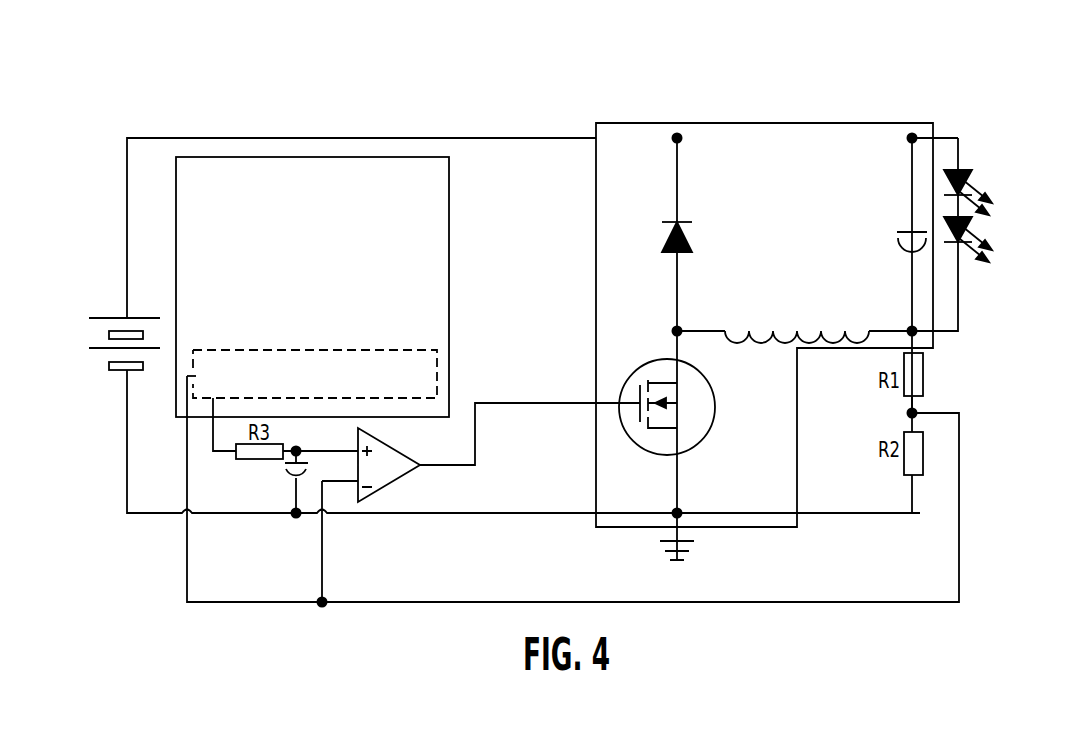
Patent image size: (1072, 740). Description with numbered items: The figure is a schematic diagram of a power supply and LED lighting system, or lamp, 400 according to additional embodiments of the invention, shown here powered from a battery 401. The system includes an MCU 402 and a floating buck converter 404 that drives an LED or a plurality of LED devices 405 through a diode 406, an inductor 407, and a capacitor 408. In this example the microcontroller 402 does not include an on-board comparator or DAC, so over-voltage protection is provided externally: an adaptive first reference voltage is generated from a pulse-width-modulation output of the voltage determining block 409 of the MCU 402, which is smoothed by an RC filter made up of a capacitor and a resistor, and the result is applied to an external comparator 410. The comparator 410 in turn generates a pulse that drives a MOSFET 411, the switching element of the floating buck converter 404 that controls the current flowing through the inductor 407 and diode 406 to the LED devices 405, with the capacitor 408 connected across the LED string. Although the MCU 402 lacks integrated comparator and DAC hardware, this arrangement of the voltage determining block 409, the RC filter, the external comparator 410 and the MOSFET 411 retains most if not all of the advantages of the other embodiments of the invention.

The LED driving circuit 400 is at (748, 84).
The battery 401 is at (110, 316).
The MCU 402 is at (449, 268).
The floating buck converter 404 is at (823, 123).
The LED devices 405 is at (962, 170).
The diode 406 is at (692, 240).
The inductor 407 is at (848, 331).
The capacitor 408 is at (905, 232).
The voltage determining block 409 is at (360, 349).
The external comparator 410 is at (400, 446).
The MOSFET 411 is at (716, 413).